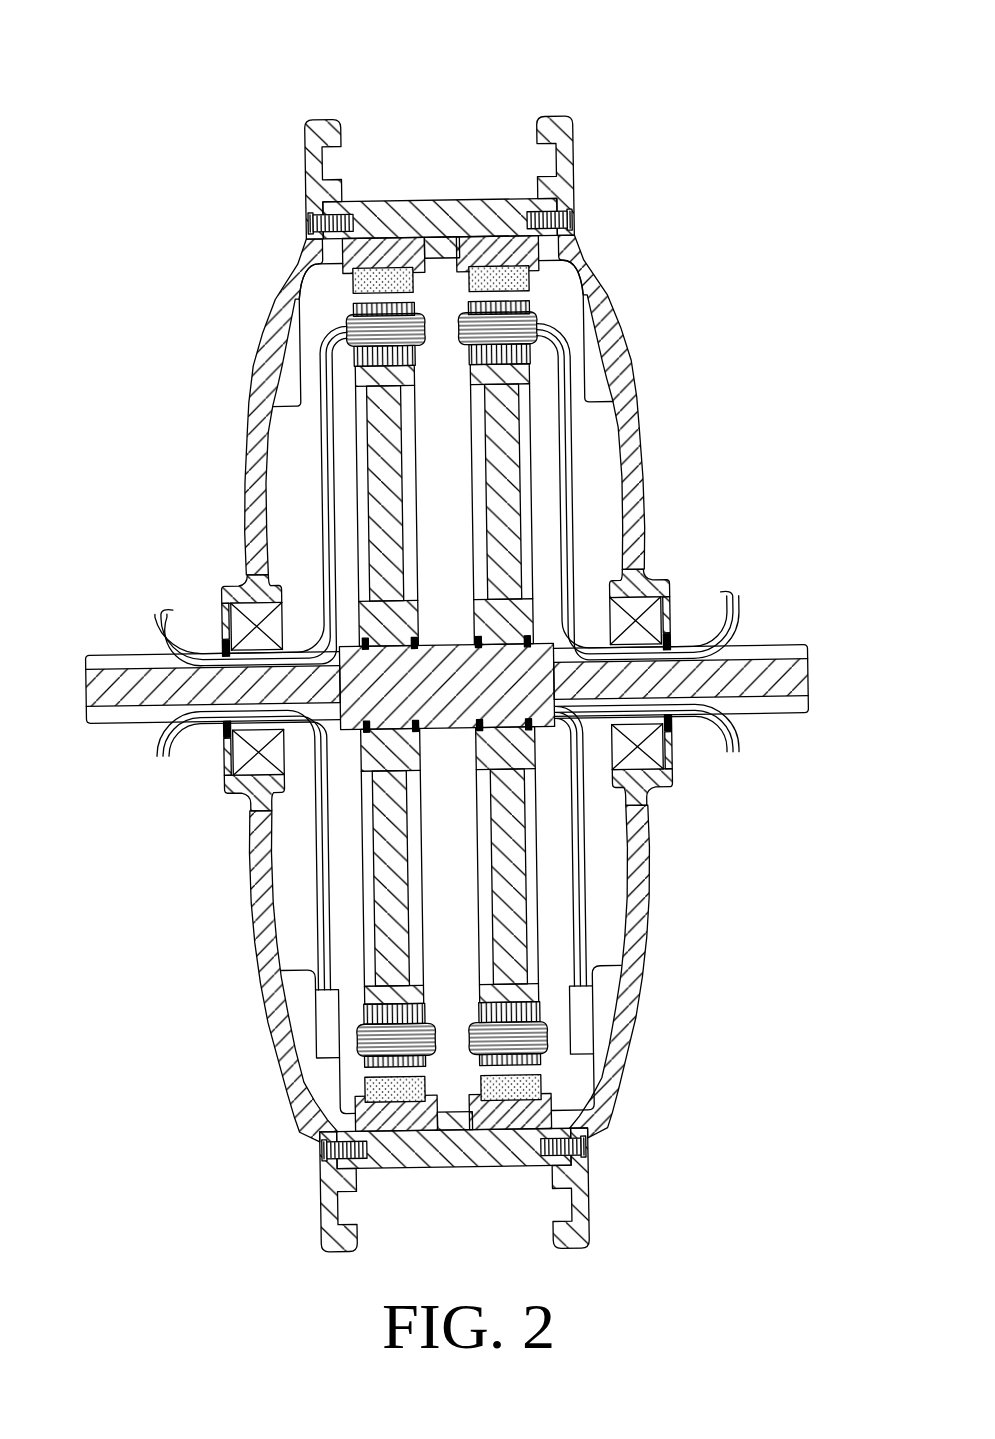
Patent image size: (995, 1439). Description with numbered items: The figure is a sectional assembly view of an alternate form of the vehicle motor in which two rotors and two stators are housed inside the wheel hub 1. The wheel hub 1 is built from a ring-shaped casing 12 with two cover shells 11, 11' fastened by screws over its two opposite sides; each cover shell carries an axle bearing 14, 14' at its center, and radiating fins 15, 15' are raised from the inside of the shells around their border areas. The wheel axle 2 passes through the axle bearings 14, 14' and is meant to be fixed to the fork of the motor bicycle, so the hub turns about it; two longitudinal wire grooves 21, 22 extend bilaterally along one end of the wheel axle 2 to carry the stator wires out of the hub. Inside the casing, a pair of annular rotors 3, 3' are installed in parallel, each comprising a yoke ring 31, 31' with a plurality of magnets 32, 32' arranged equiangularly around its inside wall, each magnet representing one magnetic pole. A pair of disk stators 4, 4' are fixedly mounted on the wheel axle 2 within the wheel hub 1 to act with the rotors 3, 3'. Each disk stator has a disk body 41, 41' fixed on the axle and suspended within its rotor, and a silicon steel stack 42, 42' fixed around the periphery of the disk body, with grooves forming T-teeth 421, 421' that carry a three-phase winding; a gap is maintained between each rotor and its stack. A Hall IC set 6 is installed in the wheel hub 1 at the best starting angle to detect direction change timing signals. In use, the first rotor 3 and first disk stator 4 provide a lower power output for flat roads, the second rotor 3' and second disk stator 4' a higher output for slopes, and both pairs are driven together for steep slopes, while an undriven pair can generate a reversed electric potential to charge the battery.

The wheel hub 1 is at (266, 631).
The cover shell 11 is at (549, 121).
The cover shell 11' is at (325, 124).
The ring-shaped casing 12 is at (450, 213).
The wheel axle 2 is at (470, 673).
The longitudinal wire groove 21 is at (127, 655).
The longitudinal wire groove 22 is at (142, 712).
The annular rotor 3 is at (576, 239).
The annular rotor 3' is at (306, 228).
The yoke ring 31 is at (593, 272).
The yoke ring 31' is at (296, 265).
The magnet 32 is at (600, 347).
The magnet 32' is at (302, 325).
The axle bearing 14 is at (679, 655).
The axle bearing 14' is at (235, 658).
The radiating fin 15 is at (639, 686).
The radiating fin 15' is at (261, 691).
The disk stator 4 is at (606, 682).
The disk stator 4' is at (293, 686).
The disk body 41 is at (616, 875).
The disk body 41' is at (289, 880).
The silicon steel stack 42 is at (606, 1023).
The silicon steel stack 42' is at (303, 992).
The T-tooth 421 is at (614, 1083).
The T-tooth 421' is at (312, 1098).
The Hall IC set 6 is at (322, 1025).